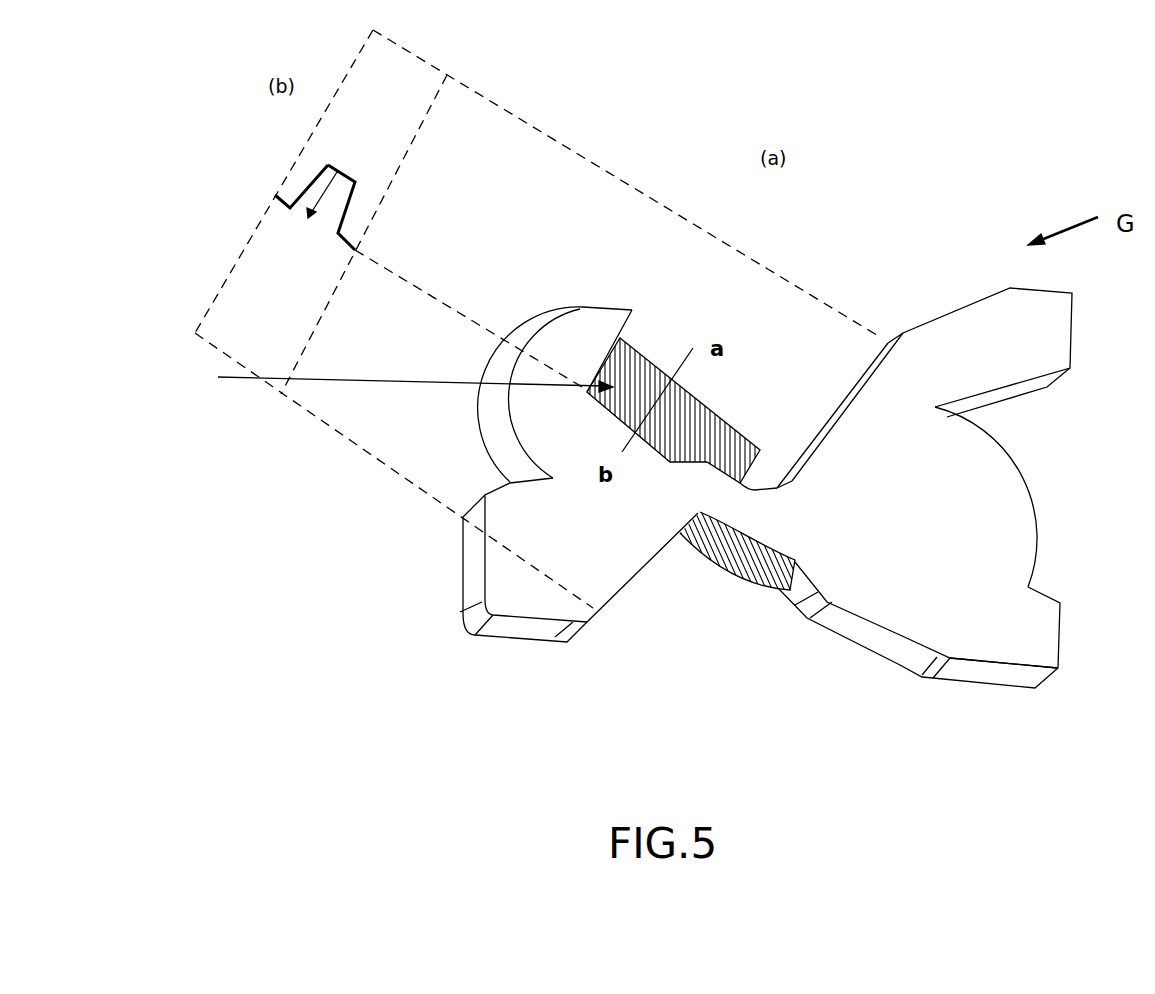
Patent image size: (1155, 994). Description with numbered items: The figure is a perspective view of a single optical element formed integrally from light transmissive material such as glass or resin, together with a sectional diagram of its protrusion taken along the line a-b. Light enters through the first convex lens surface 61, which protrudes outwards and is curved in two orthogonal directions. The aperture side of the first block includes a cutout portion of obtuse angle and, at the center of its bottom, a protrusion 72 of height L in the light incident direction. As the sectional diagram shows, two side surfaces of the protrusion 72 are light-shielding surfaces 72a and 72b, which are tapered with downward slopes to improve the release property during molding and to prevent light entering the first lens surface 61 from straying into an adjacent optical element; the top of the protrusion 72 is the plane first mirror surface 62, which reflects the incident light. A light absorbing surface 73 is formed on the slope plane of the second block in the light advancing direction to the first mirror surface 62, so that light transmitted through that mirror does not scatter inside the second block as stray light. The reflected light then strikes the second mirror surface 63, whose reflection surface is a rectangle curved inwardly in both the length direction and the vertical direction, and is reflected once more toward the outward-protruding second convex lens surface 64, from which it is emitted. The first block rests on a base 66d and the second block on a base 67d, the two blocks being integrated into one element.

The first convex lens surface 61 is at (537, 332).
The first mirror surface 62 is at (673, 370).
The second mirror surface 63 is at (713, 560).
The second convex lens surface 64 is at (1018, 478).
The base 66d is at (500, 577).
The base 67d is at (875, 600).
The protrusion 72 is at (640, 363).
The light-shielding surface 72a is at (670, 470).
The light-shielding surface 72b is at (312, 187).
The light absorbing surface 73 is at (837, 403).